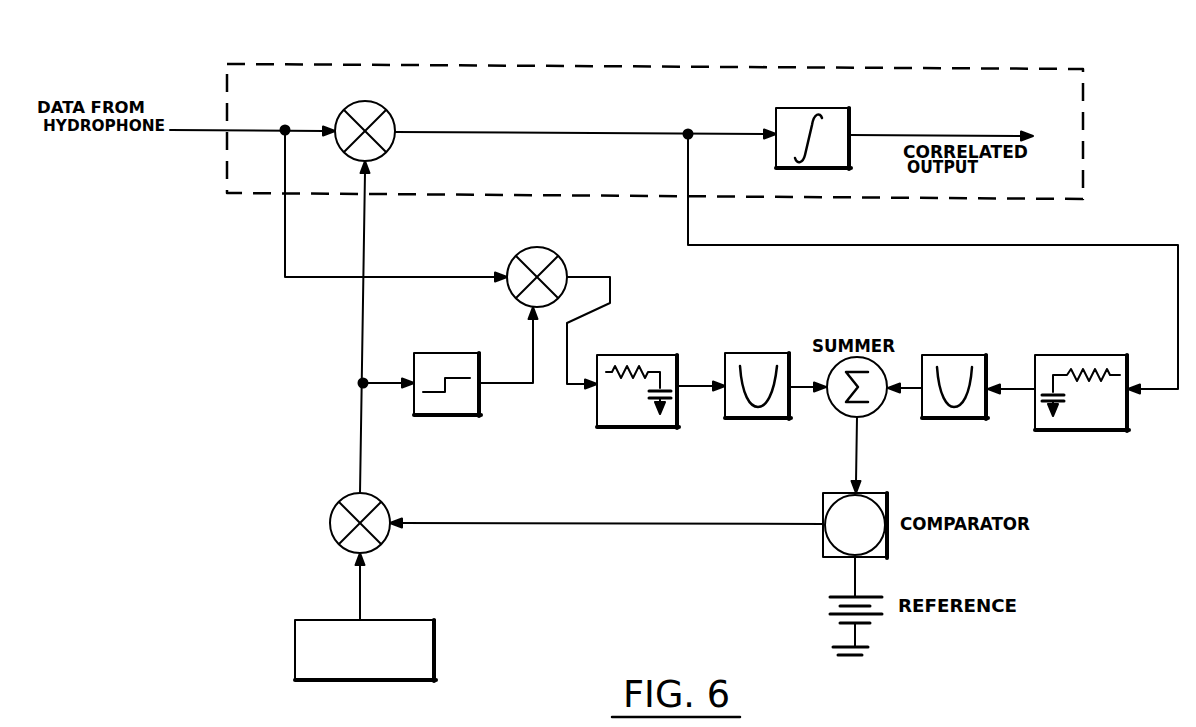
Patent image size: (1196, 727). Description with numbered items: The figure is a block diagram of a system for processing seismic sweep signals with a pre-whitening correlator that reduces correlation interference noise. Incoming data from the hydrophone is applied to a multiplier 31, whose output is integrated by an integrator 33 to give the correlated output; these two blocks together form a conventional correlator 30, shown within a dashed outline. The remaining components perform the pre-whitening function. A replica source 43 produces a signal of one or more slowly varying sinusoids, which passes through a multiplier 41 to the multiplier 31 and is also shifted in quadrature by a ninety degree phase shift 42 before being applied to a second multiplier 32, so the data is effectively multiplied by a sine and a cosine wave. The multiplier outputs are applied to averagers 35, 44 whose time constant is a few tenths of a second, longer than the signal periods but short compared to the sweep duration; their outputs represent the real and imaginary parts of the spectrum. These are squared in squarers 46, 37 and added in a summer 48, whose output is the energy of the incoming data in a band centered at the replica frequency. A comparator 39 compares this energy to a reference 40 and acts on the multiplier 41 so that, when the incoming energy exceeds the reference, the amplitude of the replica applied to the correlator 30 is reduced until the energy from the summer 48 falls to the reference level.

The conventional correlator 30 is at (376, 67).
The multiplier 31 is at (390, 150).
The second multiplier 32 is at (562, 263).
The integrator 33 is at (776, 158).
The averager 35 is at (1091, 431).
The squarer 37 is at (961, 419).
The comparator 39 is at (888, 494).
The reference 40 is at (830, 597).
The multiplier 41 is at (382, 506).
The 90° phase shift 42 is at (471, 416).
The replica source 43 is at (422, 620).
The averager 44 is at (658, 428).
The squarer 46 is at (772, 419).
The summer 48 is at (838, 416).